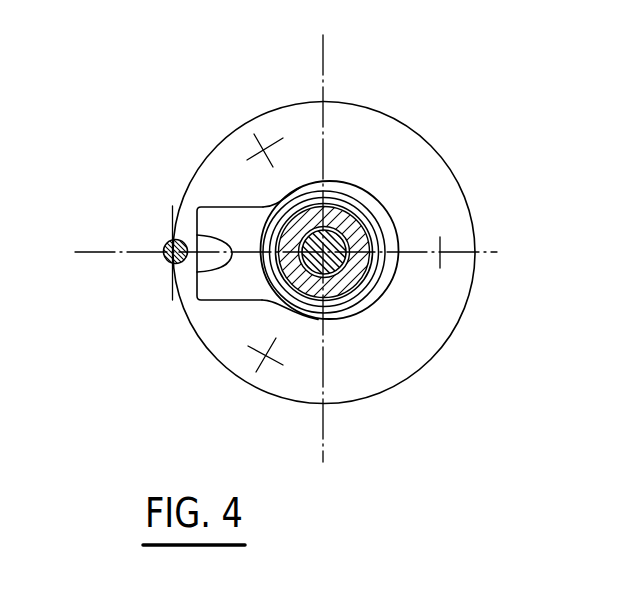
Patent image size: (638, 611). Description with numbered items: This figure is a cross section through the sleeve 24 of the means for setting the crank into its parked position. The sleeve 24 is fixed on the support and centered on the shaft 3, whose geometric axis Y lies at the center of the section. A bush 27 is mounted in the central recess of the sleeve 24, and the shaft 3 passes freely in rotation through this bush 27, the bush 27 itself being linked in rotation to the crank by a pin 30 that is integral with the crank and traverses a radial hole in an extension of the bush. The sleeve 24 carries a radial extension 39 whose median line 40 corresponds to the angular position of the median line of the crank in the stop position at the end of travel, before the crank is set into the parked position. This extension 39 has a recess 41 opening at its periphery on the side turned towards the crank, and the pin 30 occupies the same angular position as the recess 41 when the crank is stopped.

The shaft 3 is at (315, 266).
The sleeve 24 is at (386, 224).
The bush 27 is at (312, 218).
The pin 30 is at (168, 240).
The radial extension 39 is at (211, 217).
The median line 40 is at (104, 256).
The recess 41 is at (203, 248).
The geometric axis Y is at (349, 283).